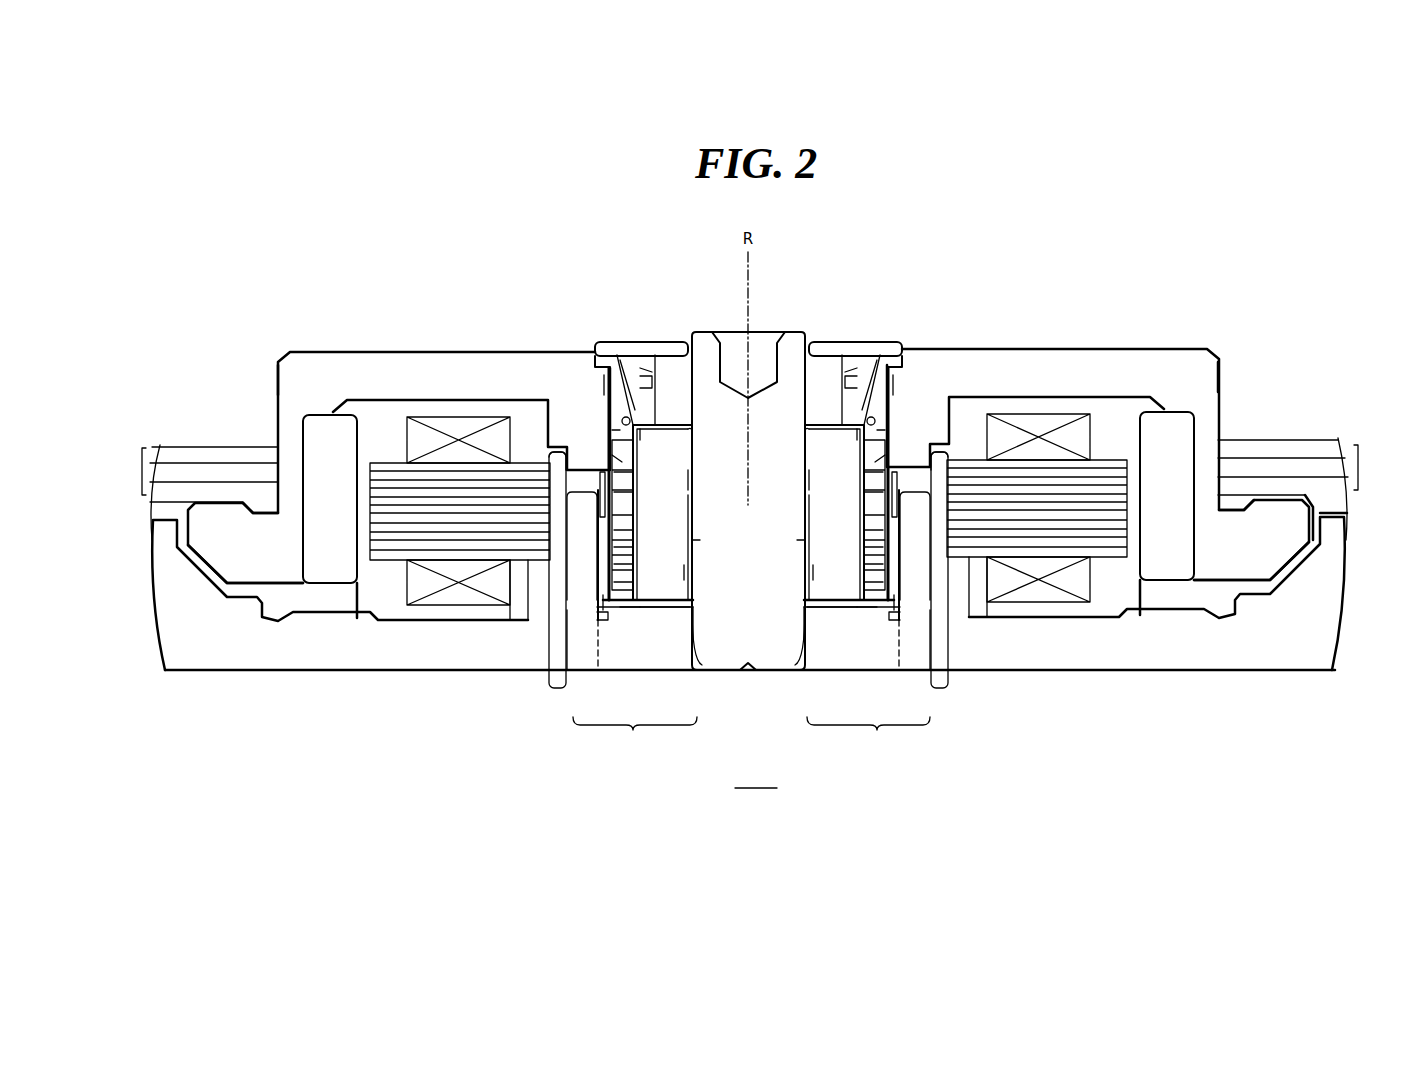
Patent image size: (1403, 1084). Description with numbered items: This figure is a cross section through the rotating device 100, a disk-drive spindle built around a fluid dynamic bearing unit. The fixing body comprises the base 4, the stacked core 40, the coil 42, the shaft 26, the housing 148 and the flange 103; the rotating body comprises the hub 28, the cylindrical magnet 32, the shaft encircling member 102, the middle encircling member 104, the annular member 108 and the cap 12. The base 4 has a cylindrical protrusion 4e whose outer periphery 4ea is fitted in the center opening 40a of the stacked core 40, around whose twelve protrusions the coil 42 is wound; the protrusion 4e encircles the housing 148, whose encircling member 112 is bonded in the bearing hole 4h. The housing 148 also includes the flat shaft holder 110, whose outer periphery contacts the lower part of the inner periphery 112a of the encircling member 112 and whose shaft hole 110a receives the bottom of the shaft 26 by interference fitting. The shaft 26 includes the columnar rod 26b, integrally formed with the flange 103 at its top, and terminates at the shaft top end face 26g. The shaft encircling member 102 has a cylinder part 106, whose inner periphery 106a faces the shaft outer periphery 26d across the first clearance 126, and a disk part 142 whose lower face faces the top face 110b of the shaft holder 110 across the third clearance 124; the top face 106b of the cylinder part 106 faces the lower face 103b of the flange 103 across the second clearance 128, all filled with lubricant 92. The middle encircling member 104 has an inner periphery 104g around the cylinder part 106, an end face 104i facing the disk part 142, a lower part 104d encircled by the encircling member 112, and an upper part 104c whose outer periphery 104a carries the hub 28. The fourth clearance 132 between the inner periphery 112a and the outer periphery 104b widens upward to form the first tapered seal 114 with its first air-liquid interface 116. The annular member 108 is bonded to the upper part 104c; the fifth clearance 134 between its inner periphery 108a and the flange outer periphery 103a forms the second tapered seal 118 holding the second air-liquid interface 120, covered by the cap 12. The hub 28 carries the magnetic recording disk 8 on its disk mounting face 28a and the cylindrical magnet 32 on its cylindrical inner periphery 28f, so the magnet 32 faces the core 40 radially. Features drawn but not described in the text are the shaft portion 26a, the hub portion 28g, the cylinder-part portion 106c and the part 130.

The base 4 is at (238, 672).
The cylindrical protrusion 4e is at (749, 576).
The outer periphery of the protrusion 4ea is at (520, 562).
The bearing hole 4h is at (558, 612).
The magnetic recording disk 8 is at (750, 489).
The cap 12 is at (600, 347).
The shaft 26 is at (724, 668).
The upper end of shaft 26a is at (718, 350).
The columnar rod 26b is at (772, 668).
The outer periphery of the middle portion of the shaft 26d is at (695, 538).
The shaft top end face 26g is at (702, 358).
The hub 28 is at (495, 351).
The disk mounting face 28a is at (236, 503).
The cylindrical inner periphery 28f is at (304, 540).
The housing side wall 28g is at (276, 380).
The cylindrical magnet 32 is at (317, 420).
The stacked core 40 is at (390, 548).
The center opening 40a is at (549, 458).
The coil 42 is at (430, 430).
The lubricant 92 is at (695, 602).
The rotating device 100 is at (756, 778).
The shaft encircling member 102 is at (688, 572).
The flange 103 is at (660, 368).
The outer periphery of the flange 103a is at (660, 362).
The lower face of the flange 103b is at (650, 432).
The middle encircling member 104 is at (612, 402).
The outer periphery of the upper part 104a is at (612, 436).
The outer periphery of the lower part 104b is at (620, 530).
The upper part of the middle encircling member 104c is at (634, 475).
The lower part of the middle encircling member 104d is at (634, 493).
The inner periphery of the middle encircling member 104g is at (616, 458).
The end face of the middle encircling member 104i is at (625, 583).
The cylinder part 106 is at (693, 515).
The inner periphery of the cylinder part 106a is at (692, 496).
The top face of the cylinder part 106b is at (692, 427).
The sleeve lower end 106c is at (693, 618).
The annular member 108 is at (609, 370).
The inner periphery of the annular member 108a is at (606, 384).
The shaft holder 110 is at (672, 672).
The shaft hole 110a is at (700, 672).
The top face of the shaft holder 110b is at (628, 608).
The encircling member 112 is at (595, 672).
The inner periphery of the encircling member 112a is at (613, 517).
The first tapered seal 114 is at (625, 565).
The first air-liquid interface 116 is at (625, 548).
The second tapered seal 118 is at (648, 392).
The second air-liquid interface 120 is at (640, 358).
The third clearance 124 is at (657, 610).
The first clearance 126 is at (690, 478).
The second clearance 128 is at (692, 425).
The ring 130 is at (622, 419).
The fourth clearance 132 is at (603, 540).
The fifth clearance 134 is at (645, 369).
The disk part 142 is at (603, 618).
The housing 148 is at (751, 738).